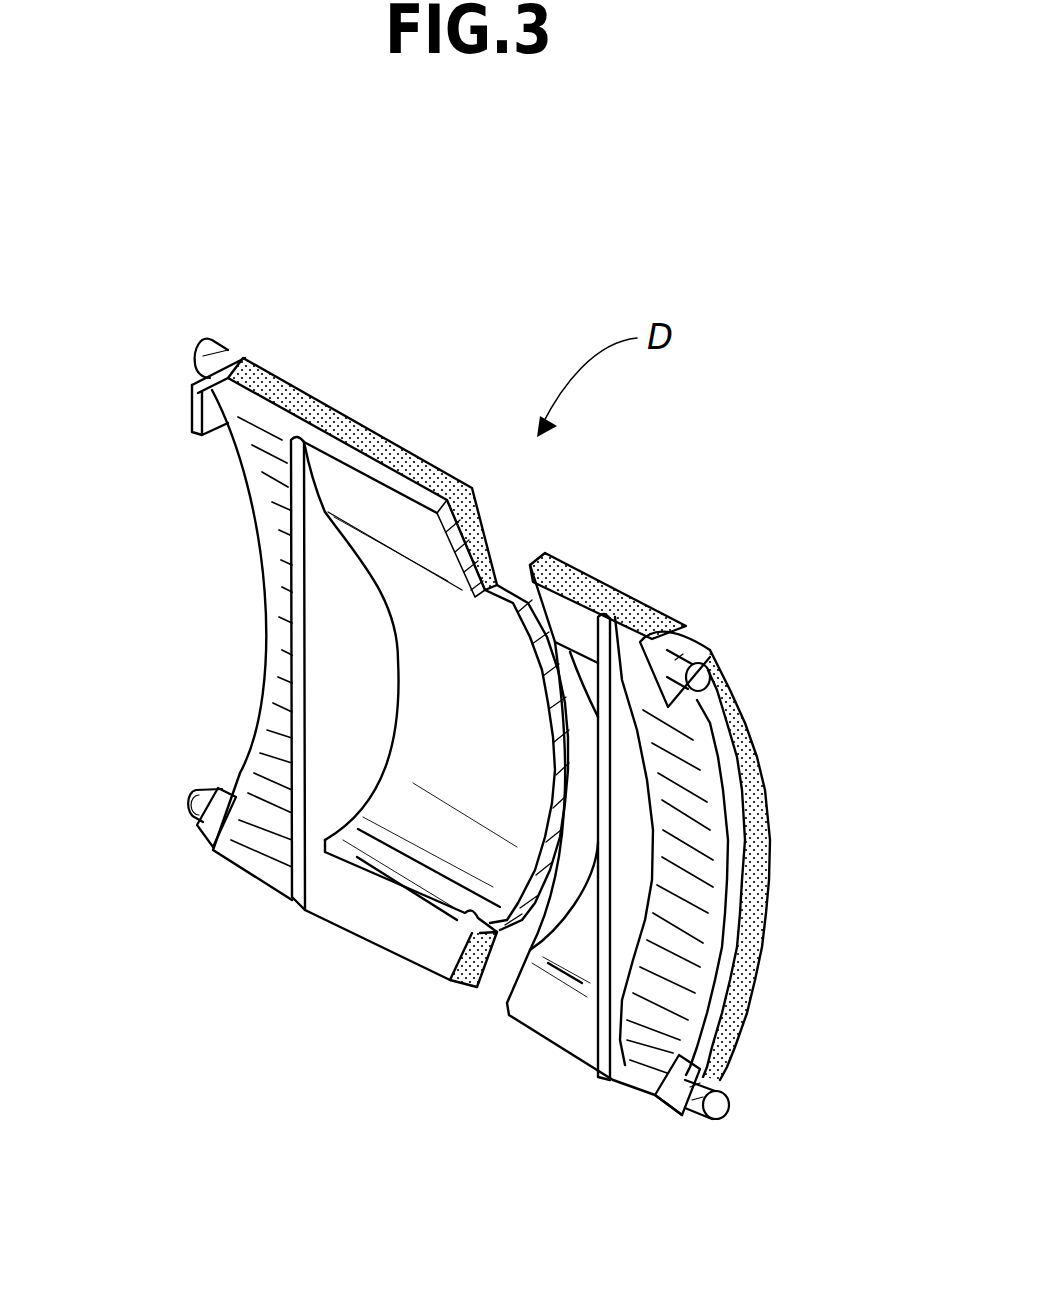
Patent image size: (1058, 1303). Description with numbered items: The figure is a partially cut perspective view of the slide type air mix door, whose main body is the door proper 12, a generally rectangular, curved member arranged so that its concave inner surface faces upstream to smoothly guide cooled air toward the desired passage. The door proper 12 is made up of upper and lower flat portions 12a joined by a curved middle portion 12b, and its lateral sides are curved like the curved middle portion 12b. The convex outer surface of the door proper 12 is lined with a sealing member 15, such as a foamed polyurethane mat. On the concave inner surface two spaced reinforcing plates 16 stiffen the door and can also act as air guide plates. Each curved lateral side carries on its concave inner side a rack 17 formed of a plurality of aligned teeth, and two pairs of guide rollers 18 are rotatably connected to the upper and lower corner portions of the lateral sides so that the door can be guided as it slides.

The door proper 12 is at (416, 918).
The upper and lower flat portions 12a is at (403, 517).
The curved middle portion 12b is at (497, 757).
The sealing member 15 is at (328, 413).
The reinforcing plates 16 is at (297, 867).
The rack 17 is at (280, 503).
The guide rollers 18 is at (226, 340).